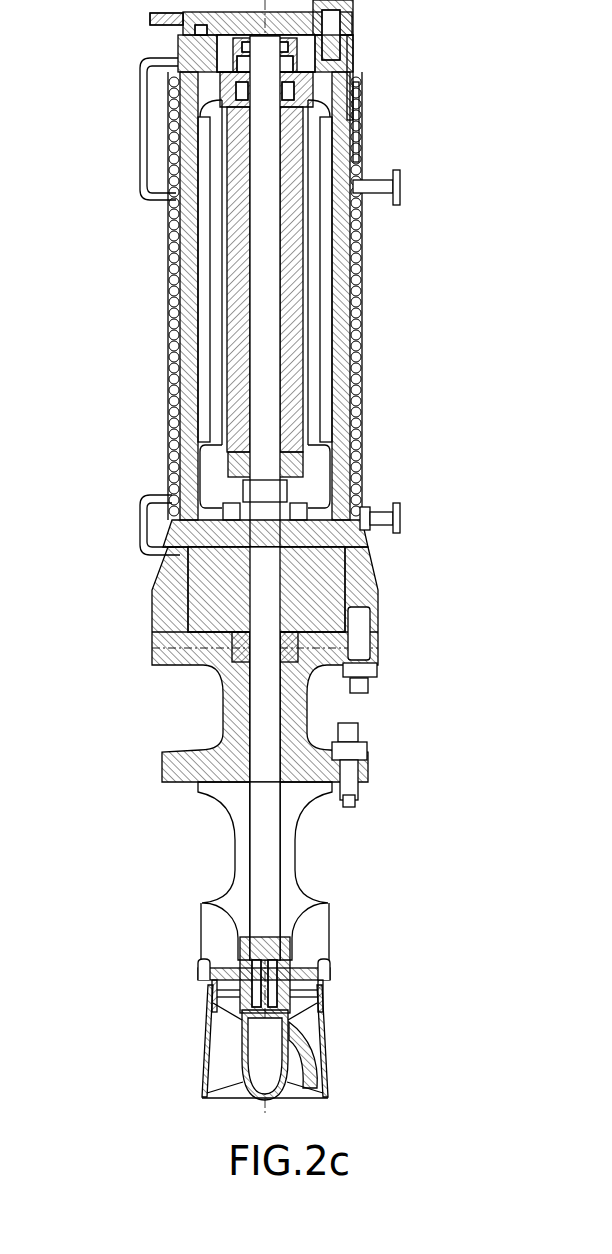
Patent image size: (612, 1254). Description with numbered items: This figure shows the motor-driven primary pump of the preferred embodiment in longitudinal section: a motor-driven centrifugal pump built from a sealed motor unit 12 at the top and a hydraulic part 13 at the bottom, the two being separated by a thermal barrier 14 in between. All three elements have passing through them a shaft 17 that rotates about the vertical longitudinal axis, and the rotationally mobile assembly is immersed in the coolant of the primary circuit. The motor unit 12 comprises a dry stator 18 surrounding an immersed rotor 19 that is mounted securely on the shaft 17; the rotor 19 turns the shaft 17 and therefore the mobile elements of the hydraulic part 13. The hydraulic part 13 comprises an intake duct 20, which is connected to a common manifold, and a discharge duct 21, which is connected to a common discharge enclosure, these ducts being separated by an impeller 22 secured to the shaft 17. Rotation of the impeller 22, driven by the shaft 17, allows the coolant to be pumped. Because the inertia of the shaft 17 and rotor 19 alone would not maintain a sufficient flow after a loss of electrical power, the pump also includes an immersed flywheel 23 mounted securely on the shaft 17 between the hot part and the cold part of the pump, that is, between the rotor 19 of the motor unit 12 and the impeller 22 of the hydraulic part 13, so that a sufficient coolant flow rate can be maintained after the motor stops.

The motor unit 12 is at (240, 480).
The hydraulic part 13 is at (237, 941).
The thermal barrier 14 is at (238, 675).
The shaft 17 is at (265, 365).
The dry stator 18 is at (331, 261).
The immersed rotor 19 is at (291, 313).
The intake duct 20 is at (312, 938).
The discharge duct 21 is at (305, 1038).
The impeller 22 is at (305, 993).
The immersed flywheel 23 is at (328, 597).